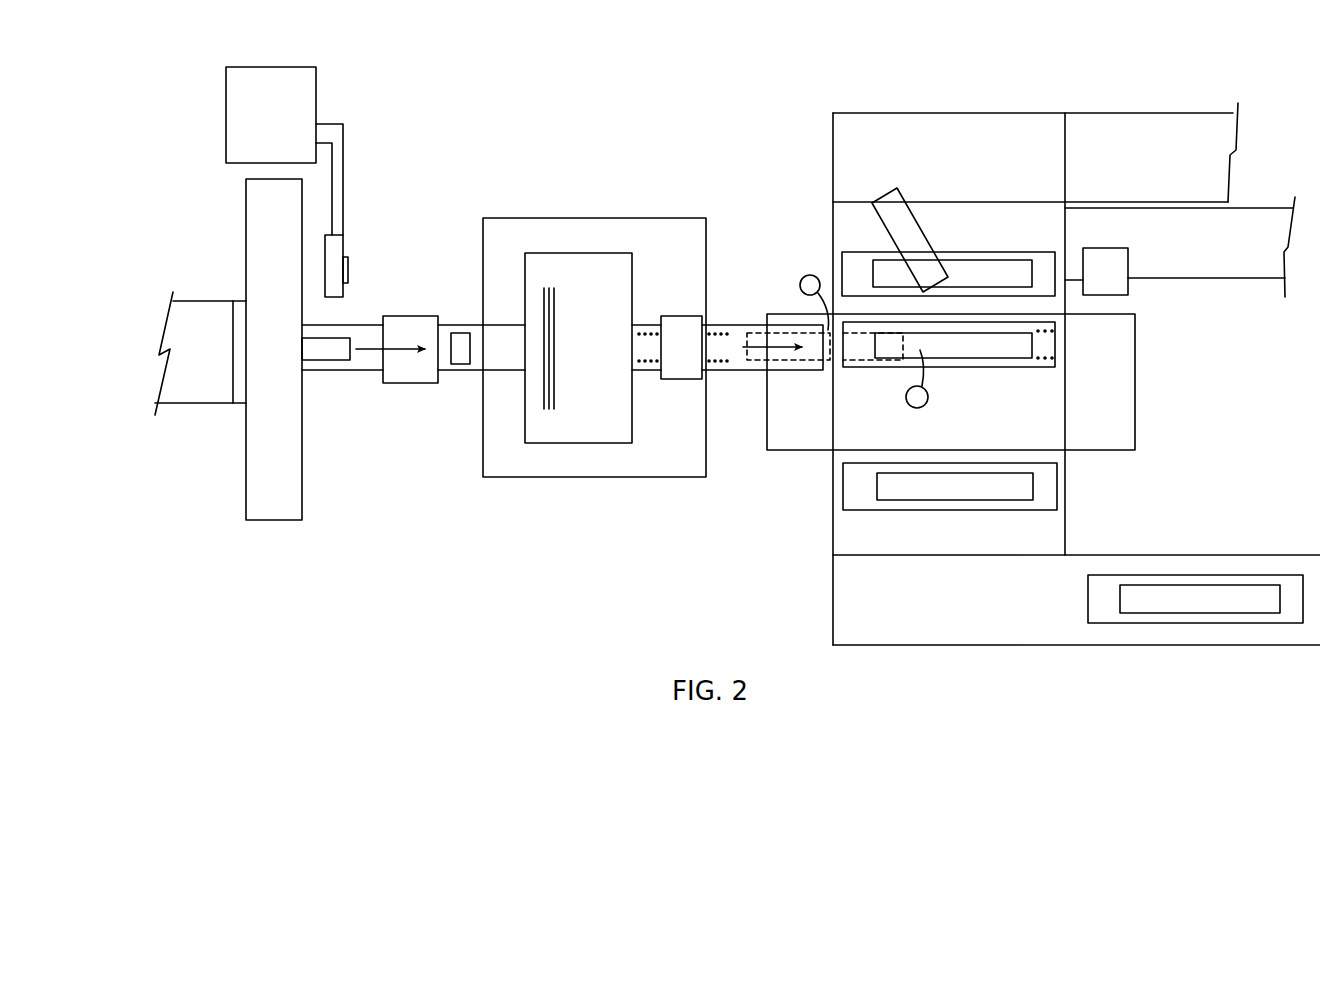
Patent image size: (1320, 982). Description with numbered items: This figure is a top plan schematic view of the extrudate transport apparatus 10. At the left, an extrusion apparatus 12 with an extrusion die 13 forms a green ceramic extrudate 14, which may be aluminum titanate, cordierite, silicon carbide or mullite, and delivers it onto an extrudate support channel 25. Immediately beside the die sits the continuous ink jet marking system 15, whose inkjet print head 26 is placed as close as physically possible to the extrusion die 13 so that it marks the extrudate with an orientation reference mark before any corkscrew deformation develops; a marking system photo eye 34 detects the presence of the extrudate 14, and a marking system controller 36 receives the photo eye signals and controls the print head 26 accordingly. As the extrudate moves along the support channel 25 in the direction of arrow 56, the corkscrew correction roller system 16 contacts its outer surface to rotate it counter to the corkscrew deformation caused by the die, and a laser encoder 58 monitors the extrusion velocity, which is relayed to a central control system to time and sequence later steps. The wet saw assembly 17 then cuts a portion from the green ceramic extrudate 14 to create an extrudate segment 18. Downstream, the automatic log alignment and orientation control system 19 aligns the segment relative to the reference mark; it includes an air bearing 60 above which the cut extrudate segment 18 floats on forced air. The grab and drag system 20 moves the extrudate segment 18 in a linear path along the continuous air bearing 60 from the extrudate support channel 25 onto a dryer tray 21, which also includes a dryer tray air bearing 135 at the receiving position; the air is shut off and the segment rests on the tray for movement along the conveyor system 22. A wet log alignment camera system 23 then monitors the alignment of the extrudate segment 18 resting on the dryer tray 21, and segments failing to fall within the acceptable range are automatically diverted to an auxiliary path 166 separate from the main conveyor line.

The extrudate transport apparatus 10 is at (256, 25).
The extrusion apparatus 12 is at (185, 289).
The extrusion die 13 is at (246, 300).
The green ceramic extrudate 14 is at (328, 345).
The continuous ink jet marking system 15 is at (299, 164).
The corkscrew correction roller system 16 is at (410, 302).
The wet saw assembly 17 is at (588, 238).
The extrudate segment 18 is at (805, 355).
The automatic log alignment and orientation control system 19 is at (687, 300).
The grab and drag system 20 is at (808, 252).
The dryer tray 21 is at (1042, 370).
The conveyor system 22 is at (1031, 94).
The wet log alignment camera system 23 is at (1138, 262).
The extrudate support channel 25 is at (340, 367).
The inkjet print head 26 is at (336, 245).
The marking system photo eye 34 is at (348, 270).
The marking system controller 36 is at (235, 112).
The arrow 56 is at (387, 350).
The laser encoder 58 is at (464, 365).
The air bearing 60 is at (715, 325).
The dryer tray air bearing 135 is at (1060, 326).
The auxiliary path 166 is at (1220, 283).